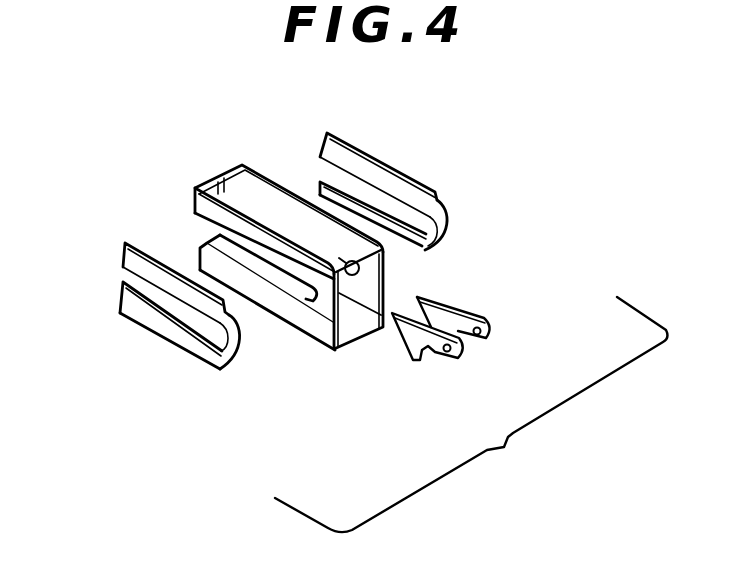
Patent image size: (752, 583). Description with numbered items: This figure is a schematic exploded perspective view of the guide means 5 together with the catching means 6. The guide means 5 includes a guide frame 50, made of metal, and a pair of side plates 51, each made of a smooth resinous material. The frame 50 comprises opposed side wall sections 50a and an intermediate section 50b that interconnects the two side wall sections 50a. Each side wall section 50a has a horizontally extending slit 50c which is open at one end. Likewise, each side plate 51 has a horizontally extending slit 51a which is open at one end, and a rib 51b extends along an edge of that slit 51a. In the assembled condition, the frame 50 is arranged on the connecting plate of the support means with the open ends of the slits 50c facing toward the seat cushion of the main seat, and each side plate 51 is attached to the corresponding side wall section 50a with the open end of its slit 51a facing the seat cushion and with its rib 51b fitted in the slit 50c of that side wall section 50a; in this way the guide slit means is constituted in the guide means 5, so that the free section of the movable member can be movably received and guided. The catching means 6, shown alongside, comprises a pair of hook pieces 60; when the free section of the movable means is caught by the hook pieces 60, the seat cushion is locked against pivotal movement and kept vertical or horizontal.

The guide means 5 is at (224, 155).
The guide frame 50 is at (308, 337).
The side wall sections 50a is at (266, 175).
The intermediate section 50b is at (372, 342).
The slit 50c is at (362, 273).
The side plates 51 is at (382, 152).
The slit 51a is at (318, 161).
The rib 51b is at (440, 213).
The means for catching the movable means 6 is at (478, 356).
The hook pieces 60 is at (478, 313).